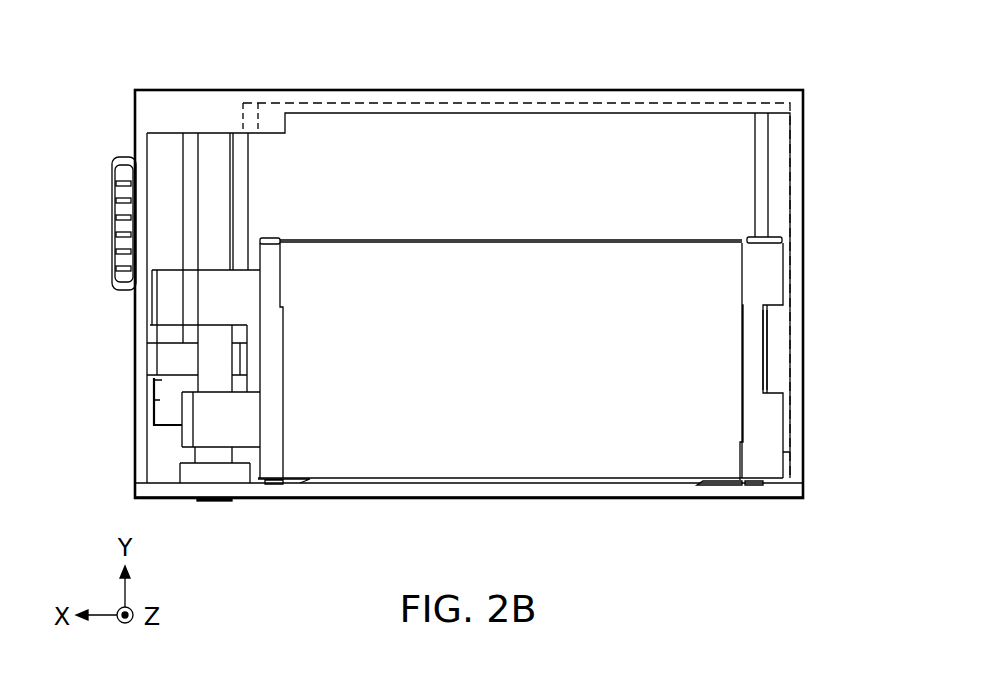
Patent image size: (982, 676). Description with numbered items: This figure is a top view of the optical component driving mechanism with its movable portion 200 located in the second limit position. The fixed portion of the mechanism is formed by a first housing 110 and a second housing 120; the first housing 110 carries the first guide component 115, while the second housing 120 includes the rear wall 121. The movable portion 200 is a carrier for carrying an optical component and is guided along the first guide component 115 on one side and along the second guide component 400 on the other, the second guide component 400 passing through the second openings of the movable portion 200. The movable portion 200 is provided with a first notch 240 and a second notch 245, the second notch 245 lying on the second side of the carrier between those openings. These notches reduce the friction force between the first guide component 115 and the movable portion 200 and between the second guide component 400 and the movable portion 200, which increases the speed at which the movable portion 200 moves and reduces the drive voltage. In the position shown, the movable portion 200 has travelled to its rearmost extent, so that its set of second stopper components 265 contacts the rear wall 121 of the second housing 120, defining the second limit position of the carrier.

The first housing 110 is at (193, 91).
The first guide component 115 is at (762, 176).
The second guide component 400 is at (207, 191).
The second notch 245 is at (250, 353).
The first notch 240 is at (763, 350).
The movable portion 200 is at (766, 433).
The second stopper components 265 is at (290, 484).
The rear wall 121 is at (622, 492).
The second housing 120 is at (773, 492).